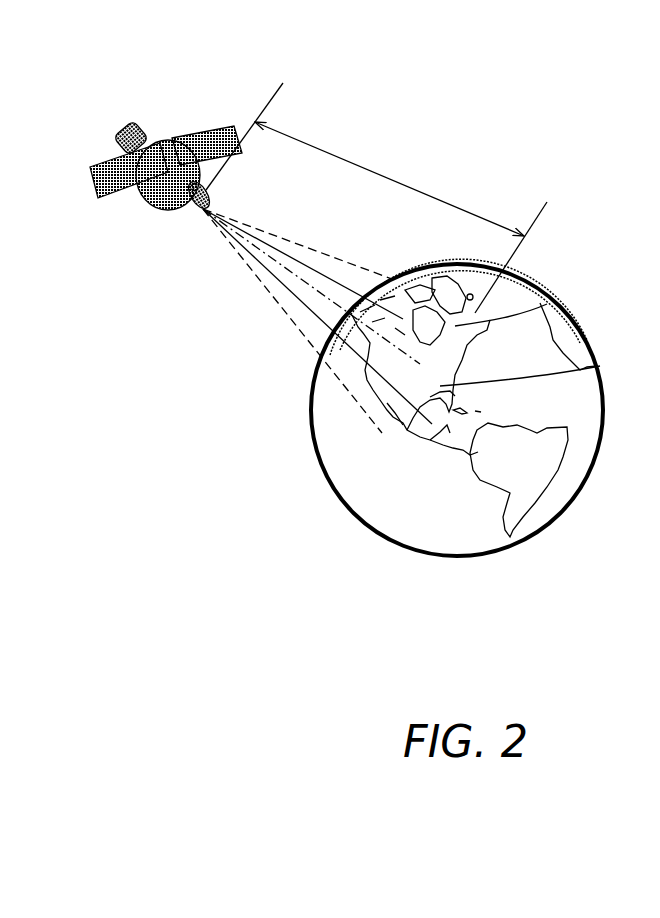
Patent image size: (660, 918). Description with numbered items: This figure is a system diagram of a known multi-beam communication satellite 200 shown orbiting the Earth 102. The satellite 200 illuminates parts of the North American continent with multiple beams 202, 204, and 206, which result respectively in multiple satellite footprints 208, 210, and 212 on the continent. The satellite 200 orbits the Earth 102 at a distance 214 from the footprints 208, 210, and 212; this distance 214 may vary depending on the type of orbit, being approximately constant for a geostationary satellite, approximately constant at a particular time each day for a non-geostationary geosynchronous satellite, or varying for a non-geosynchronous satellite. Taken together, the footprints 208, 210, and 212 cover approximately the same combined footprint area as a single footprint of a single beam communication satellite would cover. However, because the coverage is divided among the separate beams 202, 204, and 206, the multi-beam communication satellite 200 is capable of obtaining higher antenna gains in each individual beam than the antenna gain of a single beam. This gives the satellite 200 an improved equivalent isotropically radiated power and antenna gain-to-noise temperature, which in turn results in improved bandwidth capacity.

The Earth 102 is at (453, 556).
The multi-beam communication satellite 200 is at (158, 198).
The beam 202 is at (282, 292).
The beam 204 is at (345, 303).
The beam 206 is at (318, 262).
The satellite footprint 208 is at (388, 428).
The satellite footprint 210 is at (600, 366).
The satellite footprint 212 is at (547, 304).
The distance 214 is at (382, 170).